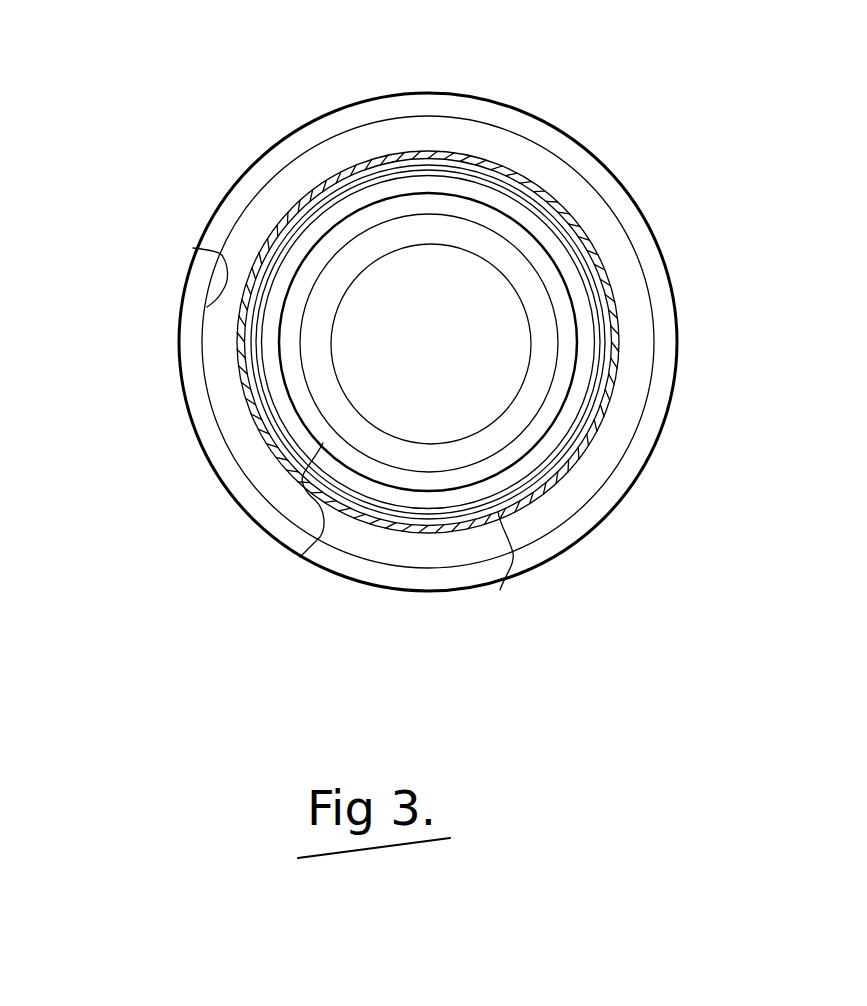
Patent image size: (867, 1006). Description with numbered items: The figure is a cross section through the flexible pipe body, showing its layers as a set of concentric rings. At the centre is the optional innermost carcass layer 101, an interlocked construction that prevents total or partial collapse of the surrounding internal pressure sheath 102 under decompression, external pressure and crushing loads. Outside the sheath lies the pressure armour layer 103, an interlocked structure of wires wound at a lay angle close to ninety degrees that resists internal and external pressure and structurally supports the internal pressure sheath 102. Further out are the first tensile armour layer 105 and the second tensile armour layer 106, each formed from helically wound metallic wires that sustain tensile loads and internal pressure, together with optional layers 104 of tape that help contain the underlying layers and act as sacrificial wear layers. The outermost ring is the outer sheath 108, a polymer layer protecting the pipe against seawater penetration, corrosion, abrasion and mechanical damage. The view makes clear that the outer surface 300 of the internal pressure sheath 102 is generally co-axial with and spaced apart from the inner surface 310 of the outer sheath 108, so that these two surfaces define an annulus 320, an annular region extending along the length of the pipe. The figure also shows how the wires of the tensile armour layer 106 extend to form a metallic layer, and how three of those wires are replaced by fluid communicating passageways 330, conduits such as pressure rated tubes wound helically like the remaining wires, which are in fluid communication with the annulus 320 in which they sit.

The carcass layer 101 is at (523, 408).
The internal pressure sheath 102 is at (323, 250).
The pressure armour layer 103 is at (588, 342).
The layers of tape 104 is at (403, 158).
The first tensile armour layer 105 is at (593, 280).
The second tensile armour layer 106 is at (347, 173).
The outer sheath 108 is at (568, 143).
The outer surface of the internal pressure sheath 300 is at (300, 557).
The inner surface of the outer sheath 310 is at (193, 248).
The annulus 320 is at (247, 427).
The fluid communicating passageways 330 is at (500, 590).